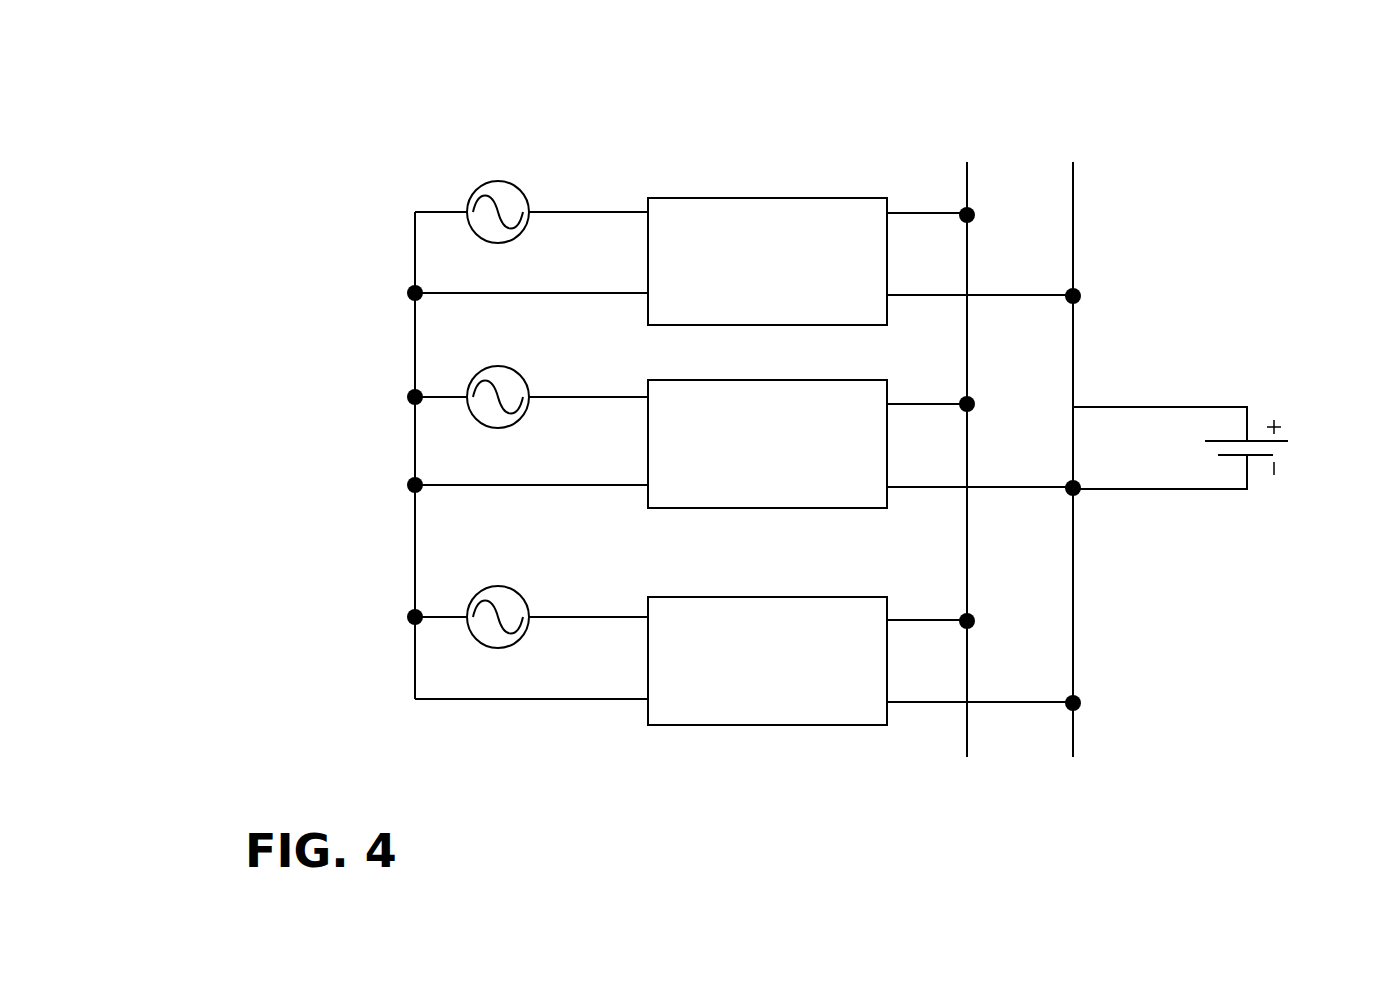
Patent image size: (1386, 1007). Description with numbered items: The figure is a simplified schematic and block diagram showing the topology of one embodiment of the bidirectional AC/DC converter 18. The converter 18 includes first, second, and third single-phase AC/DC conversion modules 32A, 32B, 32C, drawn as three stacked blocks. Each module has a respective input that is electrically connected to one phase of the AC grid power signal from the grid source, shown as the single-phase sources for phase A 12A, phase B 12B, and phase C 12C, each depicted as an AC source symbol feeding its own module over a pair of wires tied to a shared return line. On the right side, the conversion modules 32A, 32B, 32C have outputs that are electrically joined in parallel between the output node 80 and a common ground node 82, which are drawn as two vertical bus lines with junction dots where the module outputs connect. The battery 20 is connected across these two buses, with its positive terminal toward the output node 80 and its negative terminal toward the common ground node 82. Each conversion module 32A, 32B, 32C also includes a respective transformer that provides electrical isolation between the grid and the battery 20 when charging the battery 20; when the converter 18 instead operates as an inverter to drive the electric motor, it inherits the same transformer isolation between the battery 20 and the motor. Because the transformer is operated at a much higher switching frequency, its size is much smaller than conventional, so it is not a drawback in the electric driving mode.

The bidirectional AC/DC converter 18 is at (858, 106).
The grid source phase A 12A is at (517, 186).
The grid source phase B 12B is at (517, 371).
The grid source phase C 12C is at (517, 591).
The first single-phase AC/DC conversion module 32A is at (797, 197).
The second single-phase AC/DC conversion module 32B is at (797, 379).
The third single-phase AC/DC conversion module 32C is at (800, 596).
The output node 80 is at (975, 209).
The common ground node 82 is at (1080, 492).
The battery 20 is at (1262, 412).